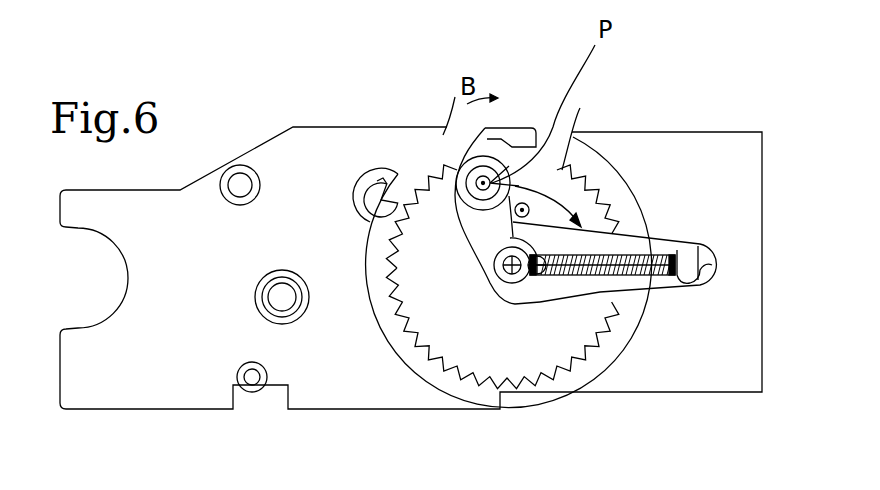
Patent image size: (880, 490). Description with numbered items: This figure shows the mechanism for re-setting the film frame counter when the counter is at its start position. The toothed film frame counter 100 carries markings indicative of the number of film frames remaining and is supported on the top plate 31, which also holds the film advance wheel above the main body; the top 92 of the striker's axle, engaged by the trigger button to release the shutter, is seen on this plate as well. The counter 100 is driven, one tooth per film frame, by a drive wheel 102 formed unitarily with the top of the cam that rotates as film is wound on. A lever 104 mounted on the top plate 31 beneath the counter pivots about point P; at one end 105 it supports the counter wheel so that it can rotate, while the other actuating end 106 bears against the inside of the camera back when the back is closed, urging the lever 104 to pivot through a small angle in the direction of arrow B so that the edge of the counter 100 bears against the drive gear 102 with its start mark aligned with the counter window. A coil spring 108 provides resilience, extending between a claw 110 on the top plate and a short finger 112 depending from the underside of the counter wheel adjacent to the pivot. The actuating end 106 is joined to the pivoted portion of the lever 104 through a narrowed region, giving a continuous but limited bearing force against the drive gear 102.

The top plate 31 is at (313, 126).
The top of the striker's axle 92 is at (262, 306).
The film frame counter 100 is at (600, 330).
The drive wheel 102 is at (404, 170).
The lever 104 is at (493, 227).
The one end of the lever 105 is at (503, 280).
The actuating end of the lever 106 is at (528, 126).
The coil spring 108 is at (662, 253).
The claw 110 is at (697, 278).
The short finger 112 is at (537, 275).